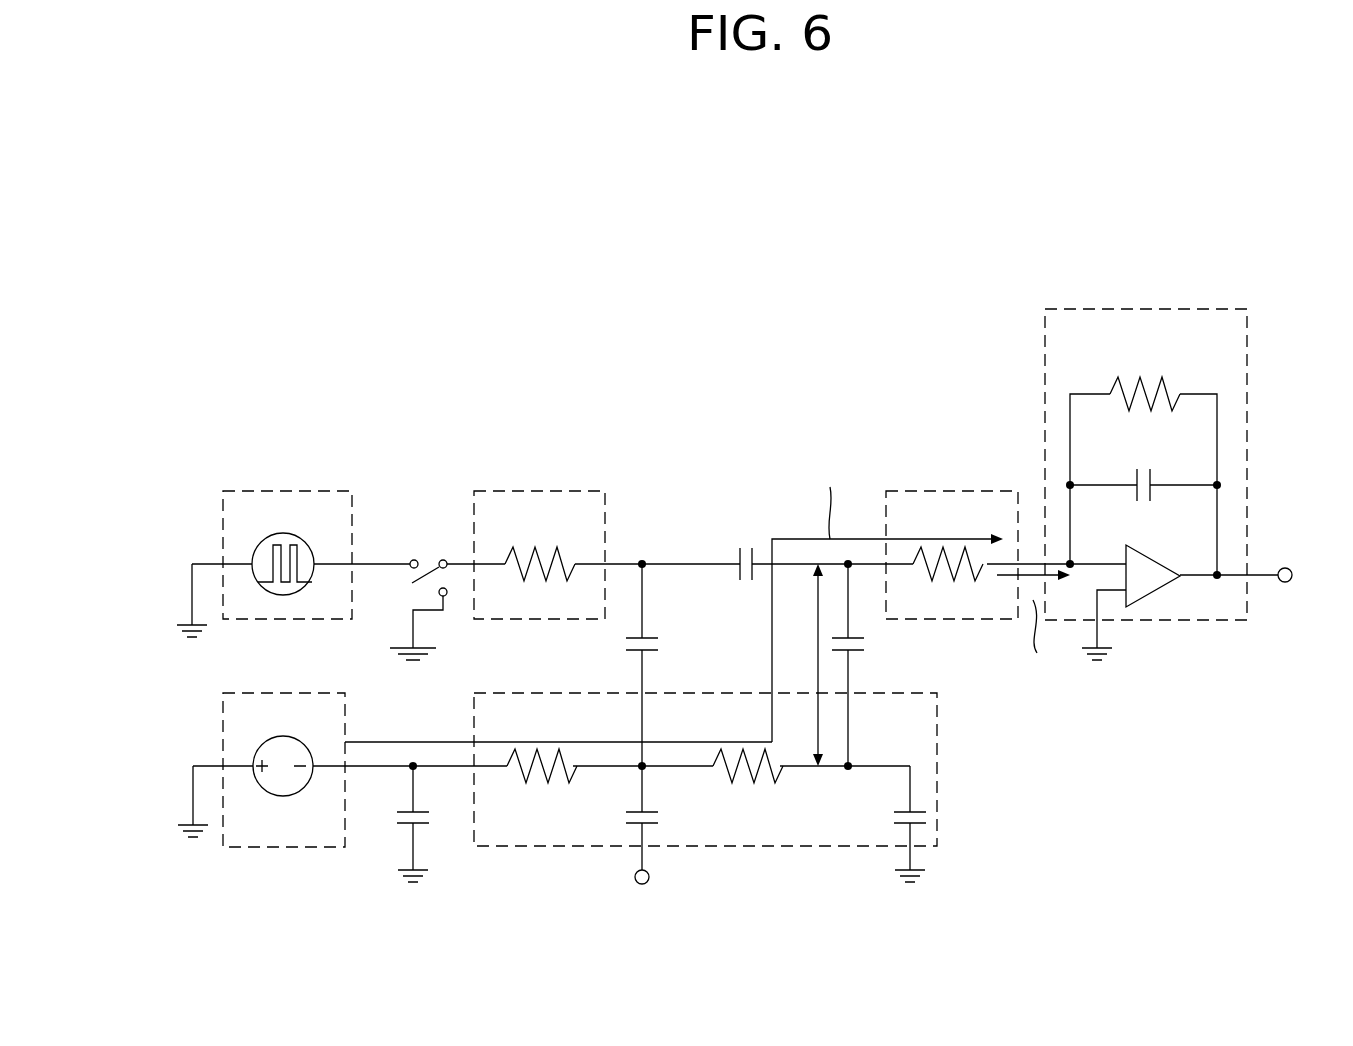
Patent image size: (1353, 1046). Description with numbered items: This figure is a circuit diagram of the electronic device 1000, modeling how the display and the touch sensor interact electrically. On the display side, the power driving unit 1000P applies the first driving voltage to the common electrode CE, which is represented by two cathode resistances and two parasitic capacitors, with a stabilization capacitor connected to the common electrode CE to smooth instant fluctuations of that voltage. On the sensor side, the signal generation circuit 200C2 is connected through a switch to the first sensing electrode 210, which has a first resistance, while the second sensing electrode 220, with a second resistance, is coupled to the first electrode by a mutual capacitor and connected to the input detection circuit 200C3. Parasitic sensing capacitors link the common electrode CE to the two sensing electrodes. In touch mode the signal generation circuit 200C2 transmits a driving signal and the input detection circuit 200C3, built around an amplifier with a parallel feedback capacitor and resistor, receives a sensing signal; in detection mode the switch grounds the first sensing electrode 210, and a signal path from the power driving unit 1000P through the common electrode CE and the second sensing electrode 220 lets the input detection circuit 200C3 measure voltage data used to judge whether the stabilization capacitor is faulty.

The electronic device 1000 is at (1240, 205).
The signal generation circuit 200C2 is at (300, 491).
The first sensing electrode 210 is at (553, 491).
The second sensing electrode 220 is at (965, 491).
The input detection circuit 200C3 is at (1190, 309).
The power driving unit 1000P is at (223, 723).
The common electrode CE is at (937, 748).